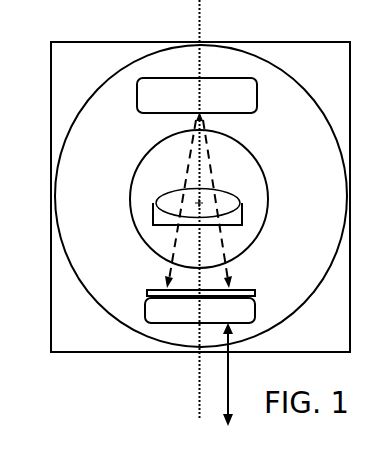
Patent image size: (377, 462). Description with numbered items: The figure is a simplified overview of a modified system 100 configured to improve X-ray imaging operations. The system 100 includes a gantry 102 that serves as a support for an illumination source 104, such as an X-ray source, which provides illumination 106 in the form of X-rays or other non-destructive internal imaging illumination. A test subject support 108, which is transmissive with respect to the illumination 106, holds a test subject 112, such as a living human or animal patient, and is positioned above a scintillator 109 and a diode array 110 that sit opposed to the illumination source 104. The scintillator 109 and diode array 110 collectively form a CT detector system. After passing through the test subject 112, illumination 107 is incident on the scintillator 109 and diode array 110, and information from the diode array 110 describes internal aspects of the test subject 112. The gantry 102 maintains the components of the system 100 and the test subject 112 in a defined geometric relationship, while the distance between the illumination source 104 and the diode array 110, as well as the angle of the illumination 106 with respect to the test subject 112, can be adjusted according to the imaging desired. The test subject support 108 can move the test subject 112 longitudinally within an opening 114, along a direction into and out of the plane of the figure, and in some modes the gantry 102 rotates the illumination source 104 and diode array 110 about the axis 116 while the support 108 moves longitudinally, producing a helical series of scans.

The system 100 is at (31, 85).
The gantry 102 is at (193, 183).
The illumination source 104 is at (229, 70).
The illumination 106 is at (230, 203).
The illumination 107 is at (239, 250).
The test subject support 108 is at (121, 187).
The scintillator 109 is at (245, 318).
The diode array 110 is at (127, 362).
The test subject 112 is at (120, 164).
The opening 114 is at (134, 233).
The axis 116 is at (116, 230).